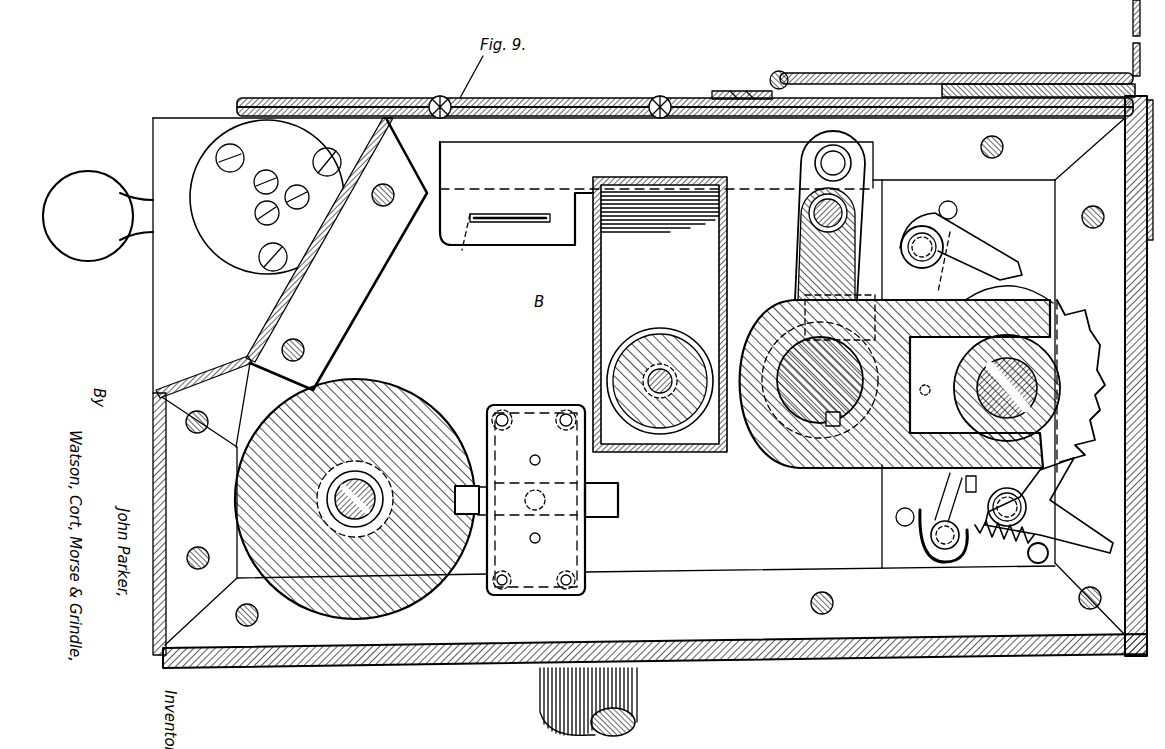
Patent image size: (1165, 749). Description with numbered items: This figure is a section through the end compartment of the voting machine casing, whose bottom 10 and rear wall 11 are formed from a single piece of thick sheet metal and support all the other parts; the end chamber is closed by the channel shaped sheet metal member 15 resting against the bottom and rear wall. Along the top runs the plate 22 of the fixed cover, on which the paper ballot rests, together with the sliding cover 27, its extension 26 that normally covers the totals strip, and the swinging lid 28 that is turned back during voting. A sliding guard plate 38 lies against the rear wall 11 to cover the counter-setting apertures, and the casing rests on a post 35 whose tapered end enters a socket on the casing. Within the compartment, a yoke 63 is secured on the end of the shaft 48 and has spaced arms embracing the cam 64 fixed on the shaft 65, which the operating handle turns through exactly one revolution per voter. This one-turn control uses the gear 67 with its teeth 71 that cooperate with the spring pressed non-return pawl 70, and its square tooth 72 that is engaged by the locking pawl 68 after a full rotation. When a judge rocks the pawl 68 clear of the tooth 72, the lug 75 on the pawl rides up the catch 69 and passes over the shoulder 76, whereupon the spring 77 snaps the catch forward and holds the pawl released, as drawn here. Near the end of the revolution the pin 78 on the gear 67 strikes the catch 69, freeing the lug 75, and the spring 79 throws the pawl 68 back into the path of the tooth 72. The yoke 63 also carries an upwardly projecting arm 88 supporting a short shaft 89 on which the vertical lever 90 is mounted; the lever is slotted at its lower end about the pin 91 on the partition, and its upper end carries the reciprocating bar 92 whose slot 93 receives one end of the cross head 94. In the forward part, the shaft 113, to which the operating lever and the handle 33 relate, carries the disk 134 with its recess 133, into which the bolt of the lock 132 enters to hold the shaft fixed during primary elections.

The bottom 10 is at (672, 654).
The rear wall 11 is at (1126, 474).
The channel shaped sheet metal member 15 is at (167, 588).
The plate 22 is at (583, 99).
The extension 26 is at (742, 91).
The sliding cover 27 is at (905, 73).
The swinging lid 28 is at (998, 84).
The handle 33 is at (75, 190).
The post 35 is at (540, 690).
The sliding guard plate 38 is at (1125, 226).
The shaft 48 is at (797, 405).
The yoke 63 is at (838, 462).
The cam 64 is at (1060, 400).
The shaft 65 is at (1050, 354).
The gear 67 is at (1078, 306).
The locking pawl 68 is at (1072, 534).
The catch 69 is at (955, 489).
The non-return pawl 70 is at (1005, 268).
The teeth 71 is at (1093, 333).
The square tooth 72 is at (1079, 440).
The lug 75 is at (907, 480).
The shoulder 76 is at (980, 555).
The spring 77 is at (925, 530).
The pin 78 is at (927, 386).
The spring 79 is at (1010, 550).
The arm 88 is at (812, 252).
The short shaft 89 is at (810, 215).
The lever 90 is at (855, 165).
The pin 91 is at (790, 302).
The bar 92 is at (628, 143).
The slot 93 is at (468, 232).
The cross head 94 is at (522, 223).
The shaft 113 is at (338, 516).
The lock 132 is at (570, 545).
The recess 133 is at (483, 469).
The disk 134 is at (397, 389).